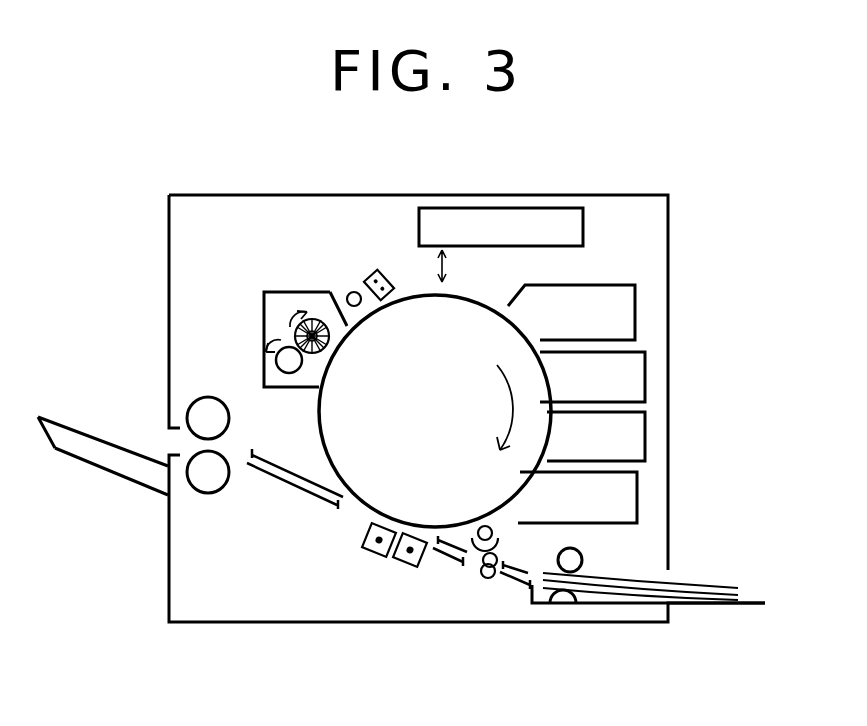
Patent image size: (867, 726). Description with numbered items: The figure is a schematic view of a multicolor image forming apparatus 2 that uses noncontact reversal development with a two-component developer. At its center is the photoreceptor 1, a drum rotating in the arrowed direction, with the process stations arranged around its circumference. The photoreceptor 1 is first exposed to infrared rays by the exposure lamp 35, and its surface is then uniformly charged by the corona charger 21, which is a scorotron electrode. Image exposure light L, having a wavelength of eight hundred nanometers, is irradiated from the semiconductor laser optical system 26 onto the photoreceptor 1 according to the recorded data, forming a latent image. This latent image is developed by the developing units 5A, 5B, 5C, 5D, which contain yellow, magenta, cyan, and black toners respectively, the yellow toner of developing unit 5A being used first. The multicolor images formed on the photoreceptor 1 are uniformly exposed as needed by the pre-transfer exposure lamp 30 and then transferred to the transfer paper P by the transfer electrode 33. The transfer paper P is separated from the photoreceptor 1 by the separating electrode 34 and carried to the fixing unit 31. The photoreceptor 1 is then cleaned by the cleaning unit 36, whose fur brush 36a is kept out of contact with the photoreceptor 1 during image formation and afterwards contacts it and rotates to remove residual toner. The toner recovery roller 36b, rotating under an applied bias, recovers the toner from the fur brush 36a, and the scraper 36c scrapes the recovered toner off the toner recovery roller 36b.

The image forming apparatus housing 2 is at (553, 185).
The photoreceptor 1 is at (328, 441).
The semiconductor laser optical system 26 is at (501, 227).
The image exposure light L is at (447, 263).
The developing unit 5A is at (571, 312).
The developing unit 5B is at (592, 377).
The developing unit 5C is at (596, 436).
The developing unit 5D is at (577, 497).
The cleaning unit 36 is at (268, 365).
The fur brush 36a is at (308, 309).
The toner recovery roller 36b is at (288, 333).
The scraper 36c is at (278, 372).
The exposure lamp 35 is at (354, 291).
The corona charger 21 is at (383, 272).
The fixing unit 31 is at (200, 397).
The separating electrode 34 is at (372, 554).
The transfer electrode 33 is at (402, 563).
The pre-transfer exposure lamp 30 is at (498, 534).
The transfer paper P is at (683, 583).